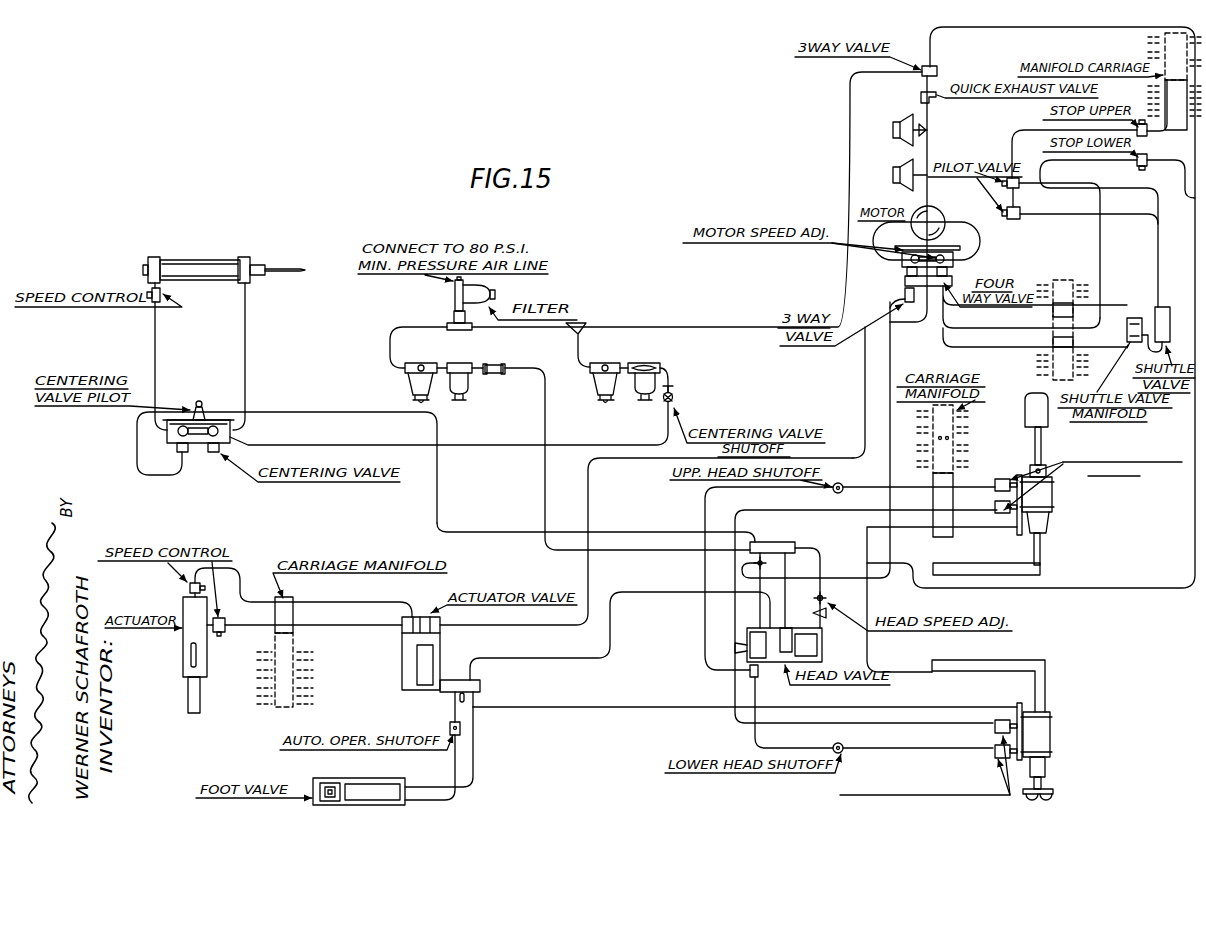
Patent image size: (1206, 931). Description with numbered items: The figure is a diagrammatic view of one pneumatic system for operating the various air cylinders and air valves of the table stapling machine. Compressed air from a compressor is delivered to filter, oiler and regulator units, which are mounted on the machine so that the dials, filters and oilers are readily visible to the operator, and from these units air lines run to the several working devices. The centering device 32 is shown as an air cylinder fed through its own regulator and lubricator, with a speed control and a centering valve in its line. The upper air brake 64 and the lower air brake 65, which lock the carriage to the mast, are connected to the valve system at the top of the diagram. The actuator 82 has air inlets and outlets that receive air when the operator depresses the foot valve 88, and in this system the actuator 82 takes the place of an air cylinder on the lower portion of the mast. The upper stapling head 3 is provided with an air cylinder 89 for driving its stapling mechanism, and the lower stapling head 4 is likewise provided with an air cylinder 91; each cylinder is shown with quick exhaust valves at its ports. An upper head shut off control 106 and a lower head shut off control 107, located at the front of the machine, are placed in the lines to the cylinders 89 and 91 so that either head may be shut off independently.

The centering device 32 is at (203, 266).
The upper air brake 64 is at (893, 121).
The lower air brake 65 is at (893, 177).
The actuator 82 is at (180, 655).
The foot pedal valve 88 is at (318, 780).
The air cylinder of the upper stapling head 89 is at (1055, 496).
The air cylinder of the lower stapling head 91 is at (1052, 742).
The upper head shut off control 106 is at (833, 492).
The lower head shut off control 107 is at (844, 748).
The upper stapling head 3 is at (1057, 484).
The lower stapling head 4 is at (1017, 730).